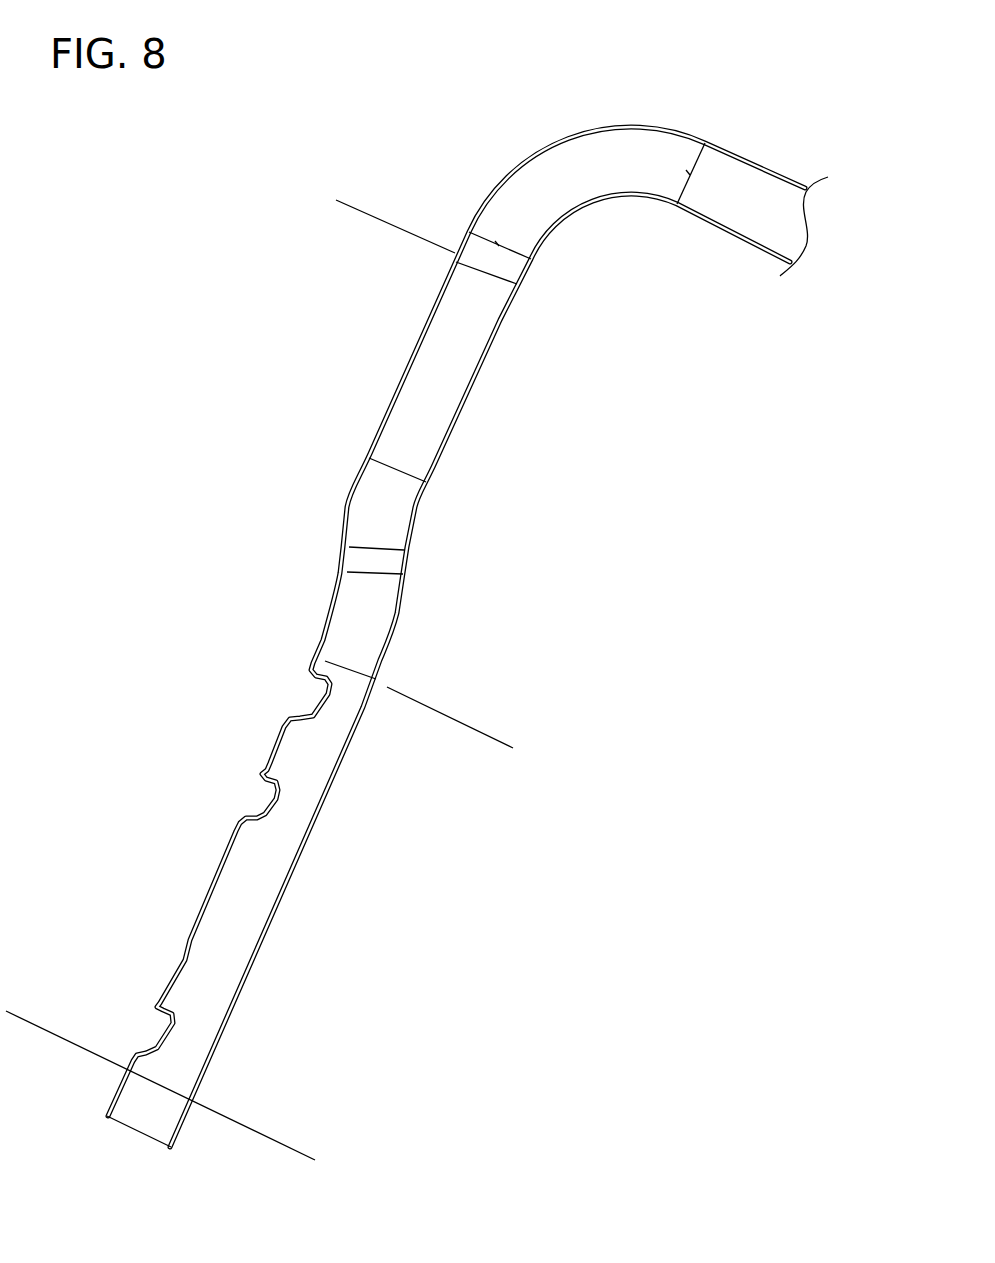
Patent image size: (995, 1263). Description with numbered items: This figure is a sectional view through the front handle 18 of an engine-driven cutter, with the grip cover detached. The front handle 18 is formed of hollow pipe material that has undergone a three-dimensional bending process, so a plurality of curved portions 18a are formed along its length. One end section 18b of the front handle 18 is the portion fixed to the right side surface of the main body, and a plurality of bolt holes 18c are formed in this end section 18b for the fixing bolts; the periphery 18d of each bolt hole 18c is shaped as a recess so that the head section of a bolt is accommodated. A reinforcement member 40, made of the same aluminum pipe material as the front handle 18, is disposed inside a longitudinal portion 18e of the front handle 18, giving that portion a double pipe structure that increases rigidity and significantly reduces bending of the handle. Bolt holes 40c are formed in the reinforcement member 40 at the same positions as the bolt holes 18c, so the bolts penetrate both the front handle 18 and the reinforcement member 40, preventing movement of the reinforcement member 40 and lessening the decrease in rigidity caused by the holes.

The front handle 18 is at (737, 153).
The curved portion 18a is at (605, 203).
The end section 18b is at (503, 742).
The bolt hole 18c is at (312, 705).
The periphery of bolt hole 18d is at (316, 684).
The longitudinal portion 18e is at (349, 207).
The reinforcement member 40 is at (488, 270).
The bolt hole 40c is at (330, 702).